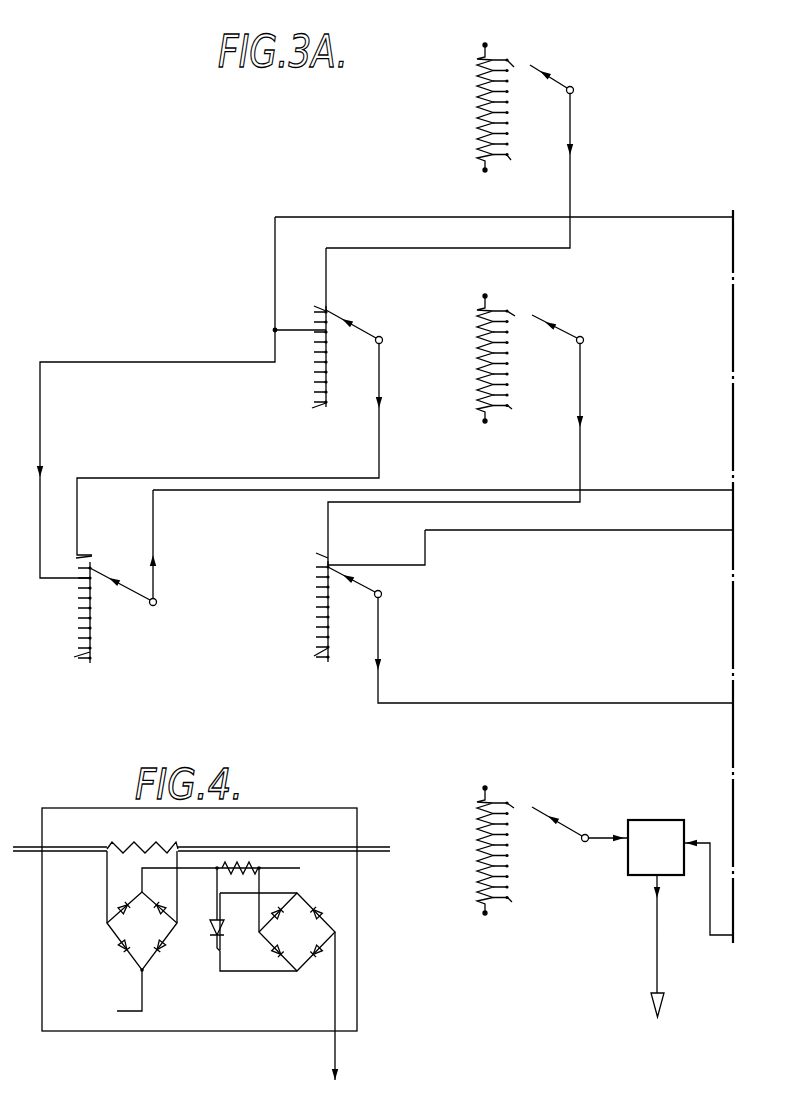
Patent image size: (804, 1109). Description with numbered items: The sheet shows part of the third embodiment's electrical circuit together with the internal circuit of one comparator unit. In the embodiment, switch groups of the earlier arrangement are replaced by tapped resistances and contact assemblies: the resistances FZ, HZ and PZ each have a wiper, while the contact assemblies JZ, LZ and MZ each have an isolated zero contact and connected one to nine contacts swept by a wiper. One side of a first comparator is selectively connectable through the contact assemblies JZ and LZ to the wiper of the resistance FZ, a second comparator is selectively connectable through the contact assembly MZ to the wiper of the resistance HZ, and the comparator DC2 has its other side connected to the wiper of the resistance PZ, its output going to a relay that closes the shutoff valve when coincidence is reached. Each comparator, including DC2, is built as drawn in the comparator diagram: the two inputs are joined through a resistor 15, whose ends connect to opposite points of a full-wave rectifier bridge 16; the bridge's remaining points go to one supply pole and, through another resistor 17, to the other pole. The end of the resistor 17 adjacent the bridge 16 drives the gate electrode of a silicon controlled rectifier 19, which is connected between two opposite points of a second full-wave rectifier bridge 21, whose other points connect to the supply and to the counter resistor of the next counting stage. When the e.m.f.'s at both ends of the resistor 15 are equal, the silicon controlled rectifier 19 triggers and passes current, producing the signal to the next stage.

In FIG. 3A, the resistance FZ is at (525, 110).
In FIG. 3A, the resistance HZ is at (530, 356).
In FIG. 3A, the contact assembly JZ is at (341, 357).
In FIG. 3A, the contact assembly LZ is at (109, 603).
In FIG. 3A, the contact assembly MZ is at (341, 603).
In FIG. 3A, the resistance PZ is at (533, 853).
In FIG. 3A, the comparator unit DC2 is at (657, 832).
In FIG. 4, the resistor 15 is at (118, 843).
In FIG. 4, the full-wave rectifier bridge 16 is at (154, 944).
In FIG. 4, the resistor 17 is at (243, 866).
In FIG. 4, the silicon controlled rectifier 19 is at (213, 927).
In FIG. 4, the full-wave rectifier bridge 21 is at (307, 942).